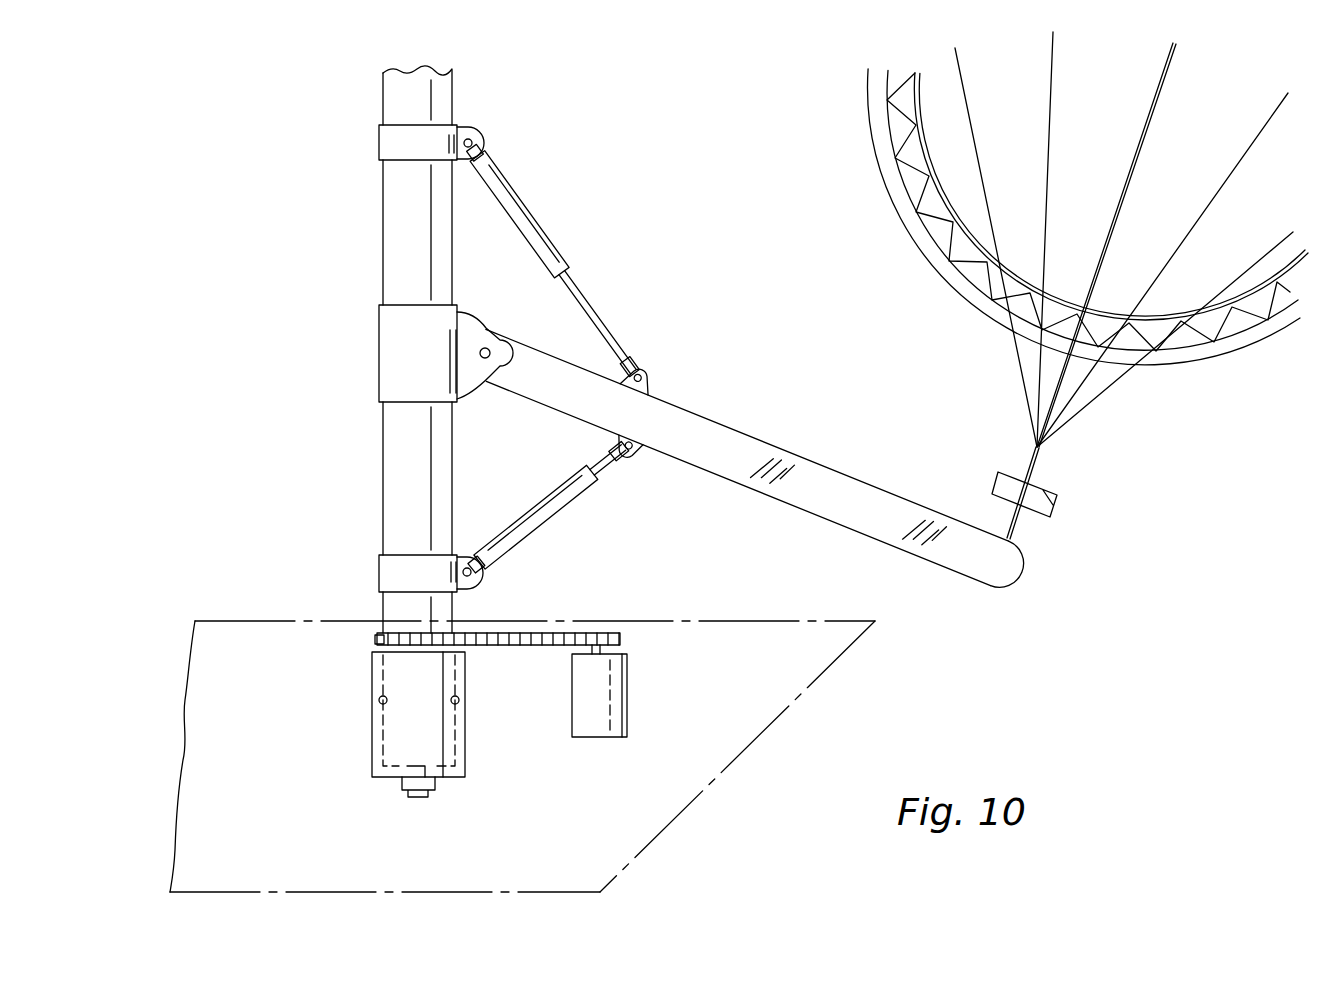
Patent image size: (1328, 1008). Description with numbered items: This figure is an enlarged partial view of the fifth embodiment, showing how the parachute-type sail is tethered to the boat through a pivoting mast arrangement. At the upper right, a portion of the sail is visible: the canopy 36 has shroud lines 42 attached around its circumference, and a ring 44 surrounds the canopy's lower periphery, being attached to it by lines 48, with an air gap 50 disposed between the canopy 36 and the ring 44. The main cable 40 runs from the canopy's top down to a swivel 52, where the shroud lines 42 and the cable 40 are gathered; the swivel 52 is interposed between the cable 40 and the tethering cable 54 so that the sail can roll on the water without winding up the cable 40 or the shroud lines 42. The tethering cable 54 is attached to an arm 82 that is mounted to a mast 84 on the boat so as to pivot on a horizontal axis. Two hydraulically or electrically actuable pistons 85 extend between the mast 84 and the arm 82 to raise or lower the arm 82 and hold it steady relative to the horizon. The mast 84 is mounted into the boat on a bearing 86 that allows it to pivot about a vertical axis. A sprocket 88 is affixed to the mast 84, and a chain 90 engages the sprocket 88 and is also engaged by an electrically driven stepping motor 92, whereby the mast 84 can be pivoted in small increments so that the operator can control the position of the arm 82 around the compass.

The canopy 36 is at (930, 155).
The cable 40 is at (1117, 220).
The shroud lines 42 is at (1053, 183).
The ring 44 is at (1210, 353).
The lines 48 is at (1267, 313).
The air gap 50 is at (940, 247).
The swivel 52 is at (1060, 496).
The tethering cable 54 is at (1015, 527).
The arm 82 is at (708, 437).
The mast 84 is at (387, 229).
The pistons 85 is at (542, 223).
The bearing 86 is at (458, 700).
The sprocket 88 is at (377, 640).
The chain 90 is at (577, 633).
The stepping motor 92 is at (622, 702).